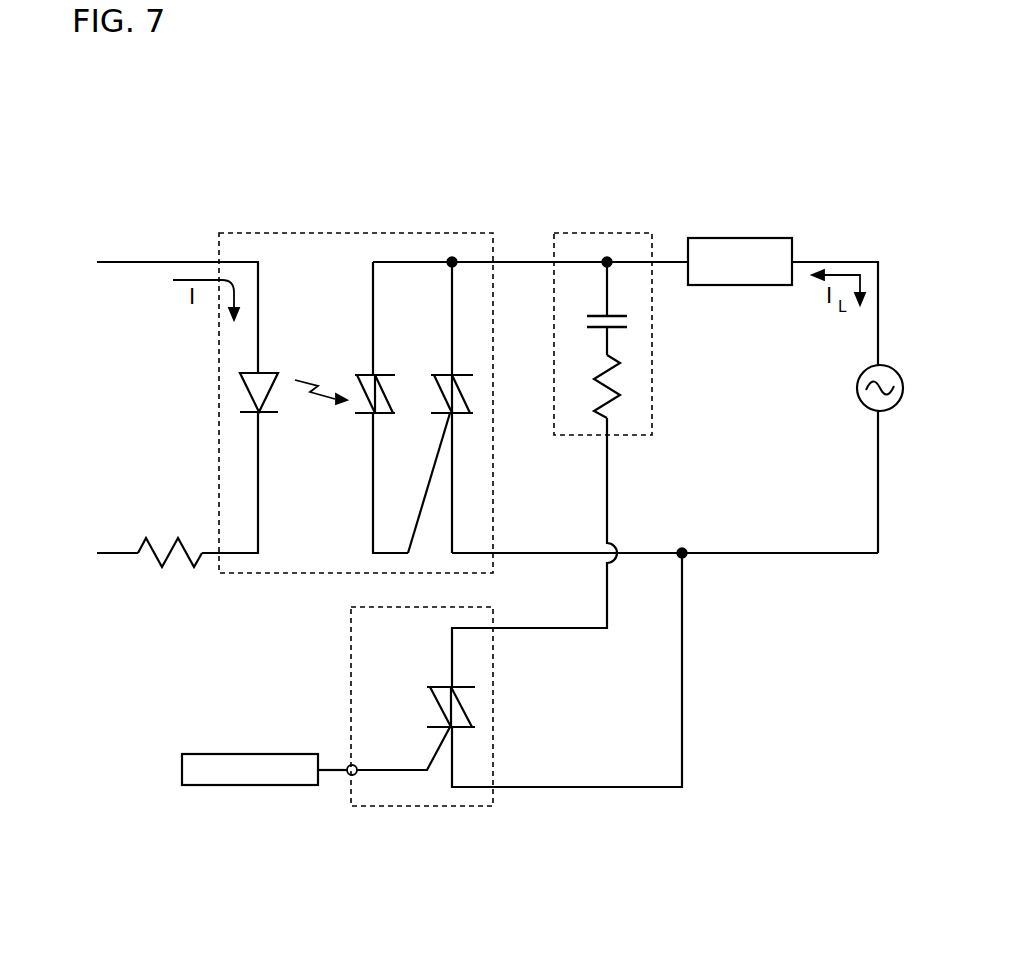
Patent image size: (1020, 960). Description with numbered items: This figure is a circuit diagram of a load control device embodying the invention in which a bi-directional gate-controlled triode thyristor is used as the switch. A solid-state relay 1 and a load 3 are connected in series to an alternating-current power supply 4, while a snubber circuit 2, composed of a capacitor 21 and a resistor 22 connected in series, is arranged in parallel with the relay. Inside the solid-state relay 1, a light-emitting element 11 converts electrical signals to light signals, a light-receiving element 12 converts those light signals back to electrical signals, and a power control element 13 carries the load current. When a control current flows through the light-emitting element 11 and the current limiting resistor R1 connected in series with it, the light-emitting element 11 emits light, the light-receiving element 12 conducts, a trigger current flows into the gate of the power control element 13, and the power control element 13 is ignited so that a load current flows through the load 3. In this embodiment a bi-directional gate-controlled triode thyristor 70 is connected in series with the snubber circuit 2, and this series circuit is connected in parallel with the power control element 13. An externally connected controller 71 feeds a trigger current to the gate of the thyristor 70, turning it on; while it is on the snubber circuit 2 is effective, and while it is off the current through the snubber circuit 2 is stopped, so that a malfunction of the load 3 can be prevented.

The solid-state relay 1 is at (358, 233).
The snubber circuit 2 is at (645, 232).
The load 3 is at (765, 238).
The alternating-current power supply 4 is at (857, 388).
The light-emitting element 11 is at (243, 392).
The light-receiving element 12 is at (363, 373).
The power control element 13 is at (445, 373).
The capacitor 21 is at (630, 322).
The resistor 22 is at (620, 385).
The bi-directional gate-controlled triode thyristor 70 is at (392, 806).
The controller 71 is at (258, 754).
The current limiting resistor R1 is at (168, 538).